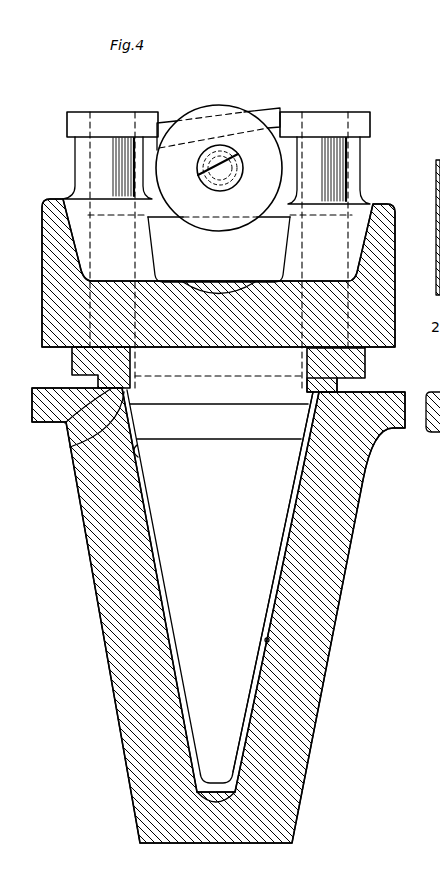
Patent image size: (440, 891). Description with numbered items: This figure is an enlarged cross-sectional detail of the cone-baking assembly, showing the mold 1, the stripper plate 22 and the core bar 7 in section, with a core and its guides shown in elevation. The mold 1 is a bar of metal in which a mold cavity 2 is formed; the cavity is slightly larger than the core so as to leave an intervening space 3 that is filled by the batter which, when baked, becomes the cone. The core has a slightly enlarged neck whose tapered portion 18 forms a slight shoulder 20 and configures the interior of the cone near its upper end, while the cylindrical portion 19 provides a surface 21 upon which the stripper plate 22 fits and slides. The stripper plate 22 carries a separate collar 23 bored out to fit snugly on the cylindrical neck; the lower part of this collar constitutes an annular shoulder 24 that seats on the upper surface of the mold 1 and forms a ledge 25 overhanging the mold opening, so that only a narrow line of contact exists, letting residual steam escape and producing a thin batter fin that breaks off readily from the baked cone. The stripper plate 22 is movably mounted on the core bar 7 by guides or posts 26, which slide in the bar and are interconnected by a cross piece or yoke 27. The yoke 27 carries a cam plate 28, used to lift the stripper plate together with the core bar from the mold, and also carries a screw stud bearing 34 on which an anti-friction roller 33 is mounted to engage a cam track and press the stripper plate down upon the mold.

The mold 1 is at (338, 582).
The mold cavities 2 is at (269, 640).
The intervening space 3 is at (254, 683).
The core bar 7 is at (383, 208).
The neck portion 18 is at (250, 427).
The neck portion 19 is at (223, 392).
The shoulder 20 is at (139, 453).
The surface 21 is at (128, 384).
The stripper plate 22 is at (365, 367).
The collar 23 is at (313, 385).
The annular shoulder 24 is at (65, 423).
The ledge 25 is at (70, 447).
The guides or posts 26 is at (99, 171).
The cross piece or yoke 27 is at (158, 205).
The cam plate 28 is at (263, 112).
The anti-friction roller 33 is at (200, 106).
The screw stud bearing 34 is at (197, 168).